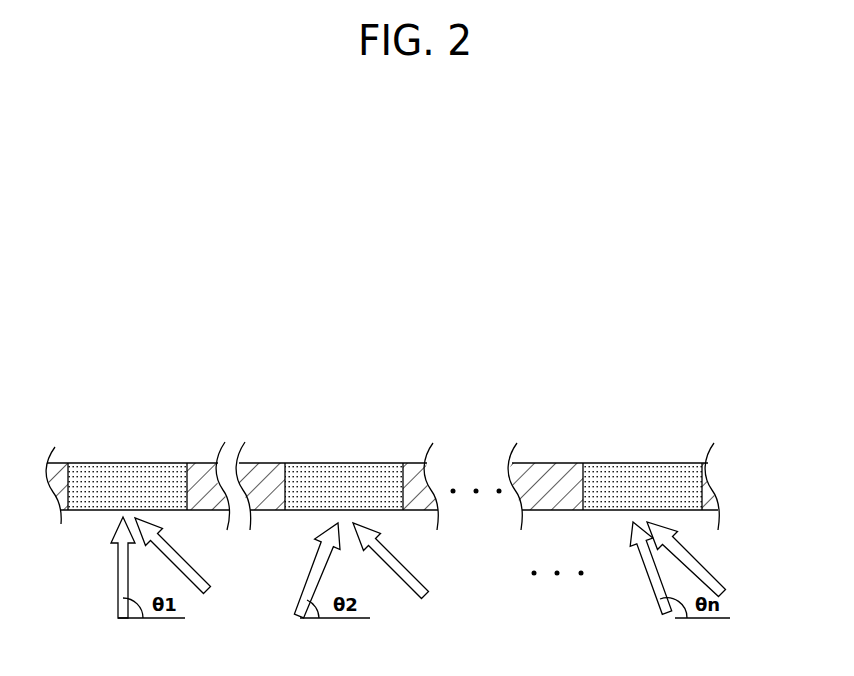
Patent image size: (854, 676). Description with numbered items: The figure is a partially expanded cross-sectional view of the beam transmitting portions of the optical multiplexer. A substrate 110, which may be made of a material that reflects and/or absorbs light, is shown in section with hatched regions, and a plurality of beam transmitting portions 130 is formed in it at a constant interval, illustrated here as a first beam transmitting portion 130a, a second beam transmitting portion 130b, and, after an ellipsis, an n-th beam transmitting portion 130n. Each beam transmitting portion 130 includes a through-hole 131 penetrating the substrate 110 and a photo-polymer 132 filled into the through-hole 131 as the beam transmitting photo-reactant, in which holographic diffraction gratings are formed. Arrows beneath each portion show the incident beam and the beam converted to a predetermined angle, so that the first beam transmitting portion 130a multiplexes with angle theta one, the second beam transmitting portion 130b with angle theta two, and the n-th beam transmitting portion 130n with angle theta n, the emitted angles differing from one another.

The first beam transmitting portion 130a is at (160, 458).
The second beam transmitting portion 130b is at (335, 435).
The n-th beam transmitting portion 130n is at (627, 458).
The substrate 110 is at (274, 476).
The beam transmitting portions 130 is at (361, 437).
The through-hole 131 is at (395, 478).
The photo-polymer 132 is at (355, 476).